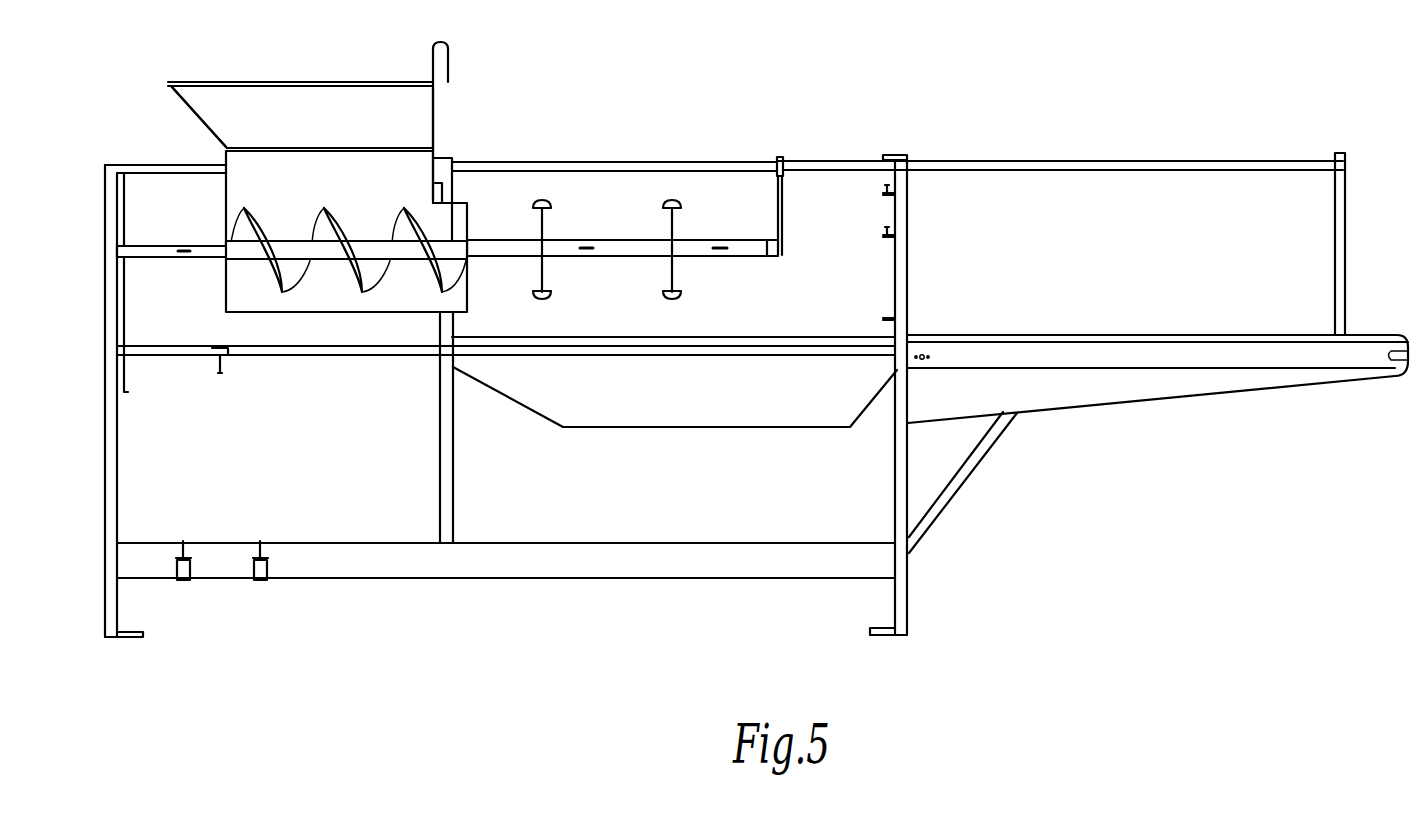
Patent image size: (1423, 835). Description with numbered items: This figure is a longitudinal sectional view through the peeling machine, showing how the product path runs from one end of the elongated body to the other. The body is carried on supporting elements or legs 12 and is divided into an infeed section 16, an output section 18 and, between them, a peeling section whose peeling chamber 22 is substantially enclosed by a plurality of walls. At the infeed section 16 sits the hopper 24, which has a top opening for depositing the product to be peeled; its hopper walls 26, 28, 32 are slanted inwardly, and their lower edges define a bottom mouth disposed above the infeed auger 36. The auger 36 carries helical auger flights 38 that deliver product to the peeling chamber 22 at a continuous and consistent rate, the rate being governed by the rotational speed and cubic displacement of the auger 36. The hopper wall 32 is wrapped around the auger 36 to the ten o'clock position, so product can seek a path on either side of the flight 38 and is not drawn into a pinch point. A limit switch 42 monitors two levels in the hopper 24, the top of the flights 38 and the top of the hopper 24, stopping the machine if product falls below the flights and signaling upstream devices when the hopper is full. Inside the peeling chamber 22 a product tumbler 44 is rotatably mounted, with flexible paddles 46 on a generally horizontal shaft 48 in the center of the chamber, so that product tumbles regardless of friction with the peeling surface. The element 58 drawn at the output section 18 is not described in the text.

The legs 12 is at (106, 608).
The infeed section 16 is at (105, 163).
The output section 18 is at (1115, 202).
The peeling chamber 22 is at (606, 200).
The hopper 24 is at (278, 82).
The hopper wall 26 is at (323, 130).
The hopper wall 28 is at (194, 113).
The hopper wall 32 is at (434, 112).
The infeed auger 36 is at (292, 287).
The helical auger flight 38 is at (323, 204).
The limit switch 42 is at (449, 48).
The product tumbler 44 is at (746, 240).
The flexible paddles 46 is at (538, 203).
The horizontal shaft 48 is at (613, 258).
The discharge chute 58 is at (1176, 334).